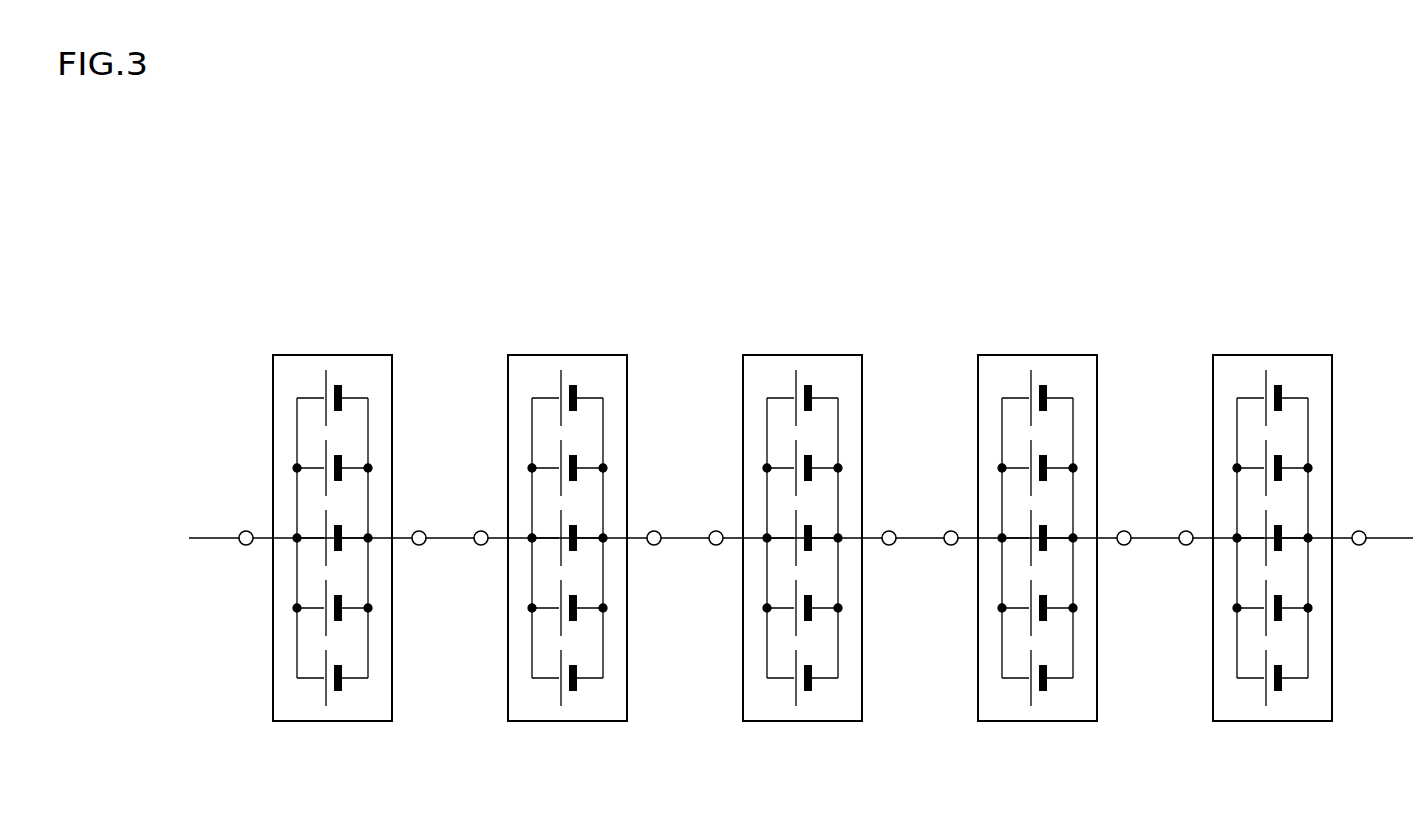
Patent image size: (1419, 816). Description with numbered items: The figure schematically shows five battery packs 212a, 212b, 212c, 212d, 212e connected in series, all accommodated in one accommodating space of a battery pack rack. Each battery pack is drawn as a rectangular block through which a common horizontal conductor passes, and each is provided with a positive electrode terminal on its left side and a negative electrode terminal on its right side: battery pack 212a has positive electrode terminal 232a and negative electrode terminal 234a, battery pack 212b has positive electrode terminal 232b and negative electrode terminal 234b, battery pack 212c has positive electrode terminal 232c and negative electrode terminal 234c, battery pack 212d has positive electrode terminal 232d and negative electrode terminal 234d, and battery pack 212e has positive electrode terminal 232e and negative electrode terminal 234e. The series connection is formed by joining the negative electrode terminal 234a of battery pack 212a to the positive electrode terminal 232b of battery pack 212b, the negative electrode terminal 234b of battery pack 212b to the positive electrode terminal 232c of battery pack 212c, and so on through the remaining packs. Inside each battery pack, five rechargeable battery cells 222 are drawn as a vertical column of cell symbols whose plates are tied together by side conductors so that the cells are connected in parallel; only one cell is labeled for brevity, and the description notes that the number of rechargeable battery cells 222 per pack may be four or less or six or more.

The rechargeable battery cell 222 is at (323, 380).
The battery pack 212a is at (328, 504).
The positive electrode terminal 232a is at (246, 531).
The negative electrode terminal 234a is at (419, 545).
The battery pack 212b is at (576, 355).
The positive electrode terminal 232b is at (481, 531).
The negative electrode terminal 234b is at (654, 545).
The battery pack 212c is at (811, 355).
The positive electrode terminal 232c is at (716, 531).
The negative electrode terminal 234c is at (889, 545).
The battery pack 212d is at (1046, 355).
The positive electrode terminal 232d is at (951, 531).
The negative electrode terminal 234d is at (1124, 545).
The battery pack 212e is at (1281, 355).
The positive electrode terminal 232e is at (1186, 531).
The negative electrode terminal 234e is at (1359, 545).